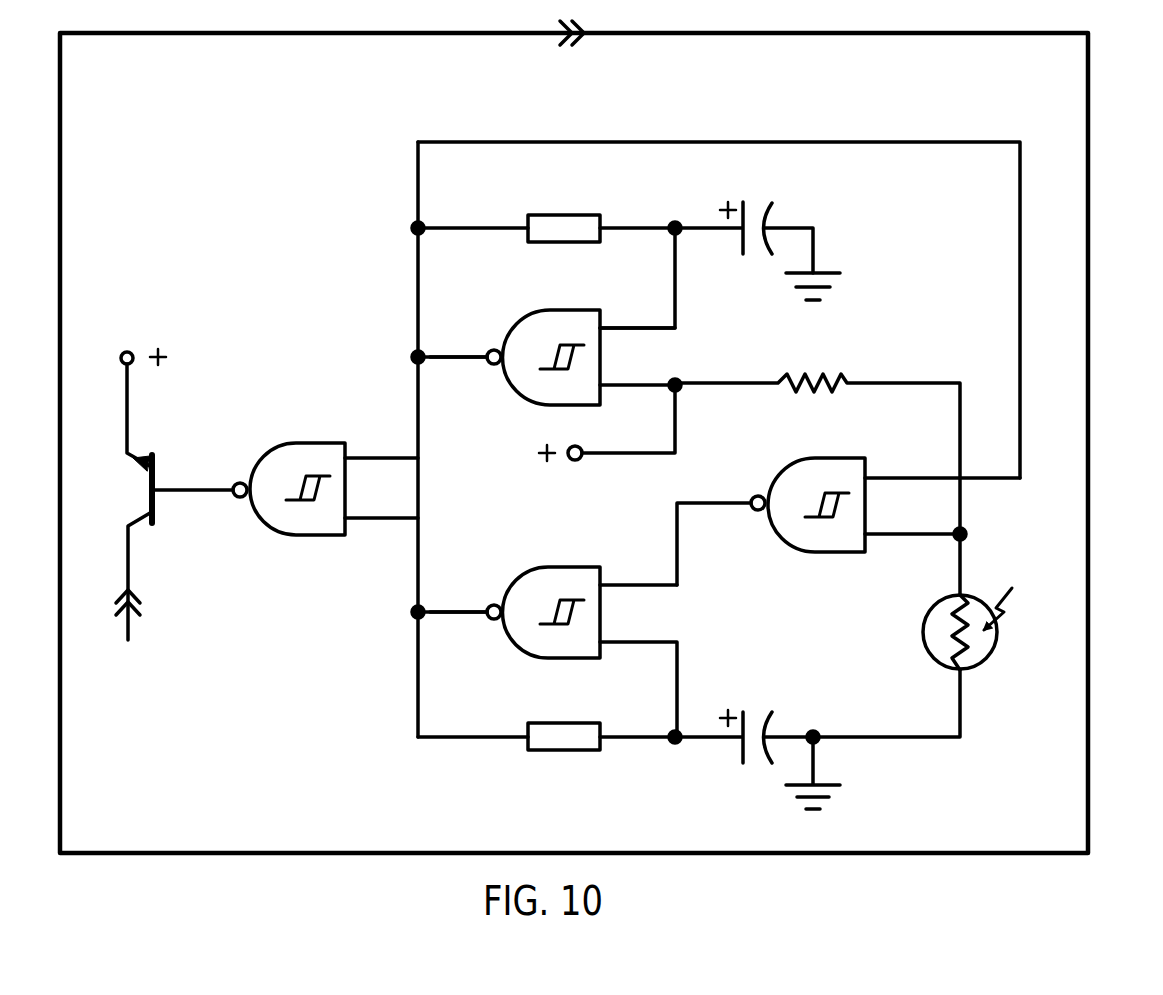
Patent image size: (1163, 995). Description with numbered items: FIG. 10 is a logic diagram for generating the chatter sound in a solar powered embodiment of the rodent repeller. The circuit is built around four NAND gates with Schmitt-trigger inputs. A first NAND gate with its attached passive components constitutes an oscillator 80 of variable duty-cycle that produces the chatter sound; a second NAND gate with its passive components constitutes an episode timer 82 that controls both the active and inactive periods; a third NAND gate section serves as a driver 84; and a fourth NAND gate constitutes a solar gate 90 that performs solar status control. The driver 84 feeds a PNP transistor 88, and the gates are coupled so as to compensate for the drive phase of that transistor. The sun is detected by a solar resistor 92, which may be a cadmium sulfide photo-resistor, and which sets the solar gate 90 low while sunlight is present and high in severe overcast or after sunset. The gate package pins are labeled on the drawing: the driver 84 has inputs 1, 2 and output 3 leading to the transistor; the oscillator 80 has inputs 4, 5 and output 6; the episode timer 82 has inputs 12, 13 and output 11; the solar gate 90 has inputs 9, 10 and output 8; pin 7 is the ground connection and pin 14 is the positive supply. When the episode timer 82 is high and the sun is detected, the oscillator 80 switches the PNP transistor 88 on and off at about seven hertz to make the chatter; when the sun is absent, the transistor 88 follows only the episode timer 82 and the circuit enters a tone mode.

The oscillator 80 is at (490, 642).
The episode timer 82 is at (490, 313).
The driver 84 is at (262, 534).
The PNP transistor 88 is at (165, 435).
The solar gate 90 is at (793, 562).
The solar resistor 92 is at (1015, 638).
The gate pin 1 is at (381, 441).
The gate pin 2 is at (381, 537).
The gate pin 3 is at (194, 470).
The gate pin 4 is at (638, 689).
The gate pin 5 is at (638, 569).
The gate pin 6 is at (458, 593).
The ground pin 7 is at (822, 292).
The gate pin 8 is at (714, 524).
The gate pin 9 is at (912, 553).
The gate pin 10 is at (942, 455).
The gate pin 11 is at (458, 336).
The gate pin 12 is at (637, 307).
The gate pin 13 is at (637, 403).
The supply pin 14 is at (607, 449).